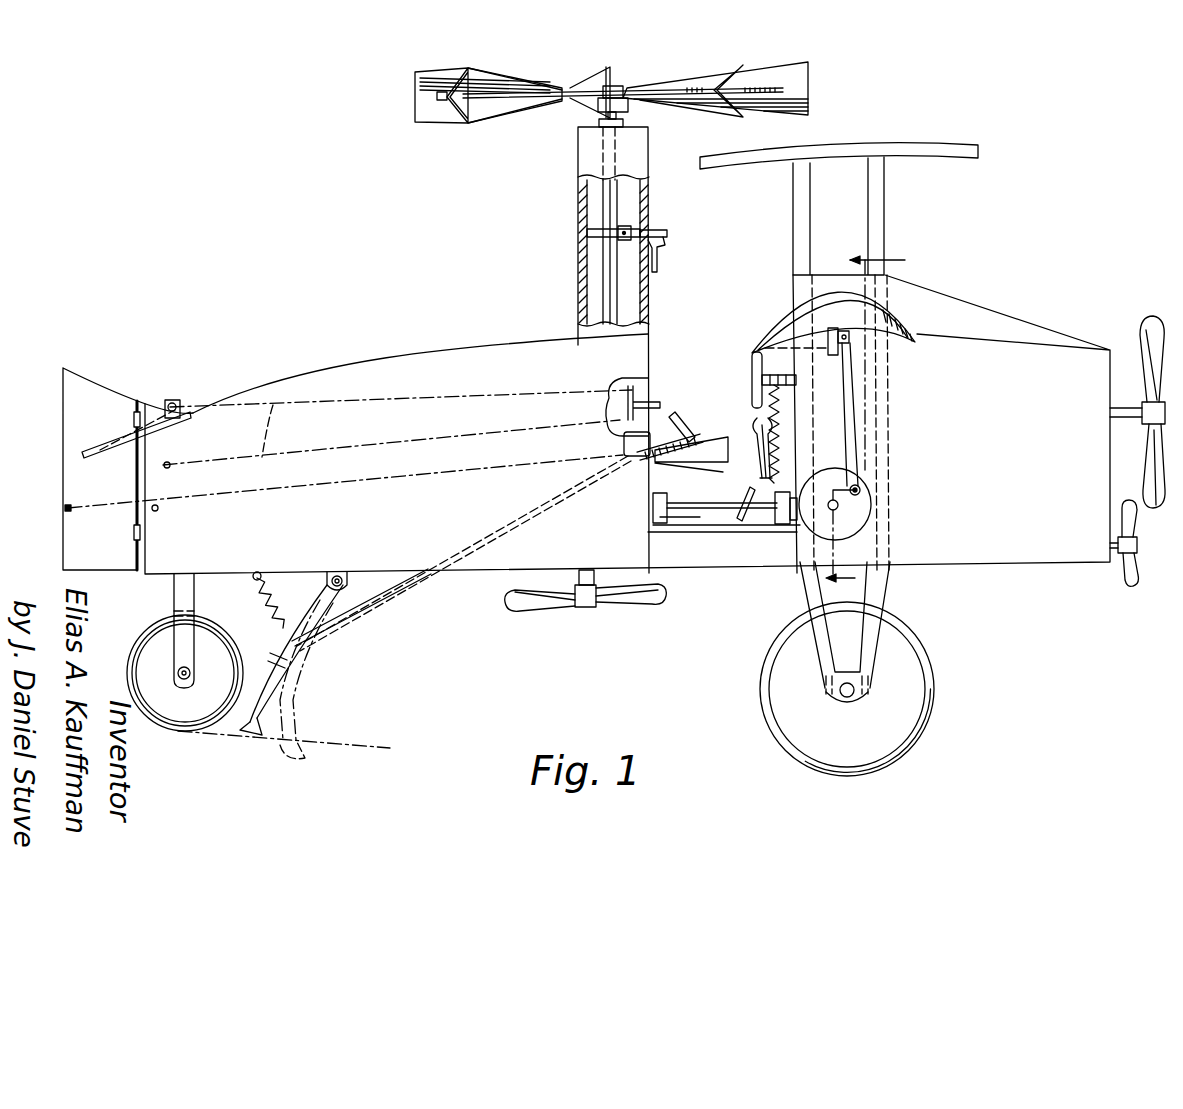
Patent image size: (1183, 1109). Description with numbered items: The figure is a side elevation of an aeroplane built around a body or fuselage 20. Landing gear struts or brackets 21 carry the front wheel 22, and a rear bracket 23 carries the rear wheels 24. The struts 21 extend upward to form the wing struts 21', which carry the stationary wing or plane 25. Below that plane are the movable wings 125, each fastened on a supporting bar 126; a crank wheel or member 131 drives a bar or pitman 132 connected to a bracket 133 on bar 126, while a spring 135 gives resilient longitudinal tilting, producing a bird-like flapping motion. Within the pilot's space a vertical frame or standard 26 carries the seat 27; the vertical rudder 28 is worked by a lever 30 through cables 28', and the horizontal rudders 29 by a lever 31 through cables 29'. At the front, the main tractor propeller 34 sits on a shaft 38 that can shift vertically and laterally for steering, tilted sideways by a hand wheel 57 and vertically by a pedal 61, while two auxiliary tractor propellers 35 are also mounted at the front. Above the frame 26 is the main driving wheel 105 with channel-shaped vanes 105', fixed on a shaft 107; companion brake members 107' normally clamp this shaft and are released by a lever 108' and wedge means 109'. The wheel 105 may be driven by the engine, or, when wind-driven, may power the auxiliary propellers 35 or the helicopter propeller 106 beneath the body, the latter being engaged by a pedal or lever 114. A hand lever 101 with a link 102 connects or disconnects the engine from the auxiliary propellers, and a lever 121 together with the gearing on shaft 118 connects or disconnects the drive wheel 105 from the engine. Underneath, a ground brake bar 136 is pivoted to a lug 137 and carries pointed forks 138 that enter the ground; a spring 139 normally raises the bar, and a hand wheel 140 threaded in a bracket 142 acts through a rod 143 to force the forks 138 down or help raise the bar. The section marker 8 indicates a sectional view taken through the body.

The body or fuselage 20 is at (589, 424).
The vertical rudder 28 is at (128, 469).
The cables or connecting means 28' is at (54, 526).
The horizontal rudders 29 is at (103, 433).
The cables or connecting means 29' is at (281, 431).
The vertical frame or standard 26 is at (648, 325).
The shaft 107 is at (649, 205).
The companion brake members 107' is at (585, 241).
The wedge means 109' is at (674, 218).
The lever 108' is at (685, 254).
The main driving wheel 105 is at (611, 90).
The channel-shaped vanes 105' is at (608, 102).
The stationary wing or plane 25 is at (930, 150).
The wing struts 21' is at (838, 216).
The section line 8- 8 is at (872, 421).
The wings 125 is at (913, 337).
The hand wheel 57 is at (752, 368).
The supporting bar 126 is at (828, 350).
The bracket 133 is at (850, 340).
The bar or pitman 132 is at (847, 427).
The crank wheel or member 131 is at (823, 480).
The spring 135 is at (785, 400).
The lever 121 is at (758, 414).
The hand lever 101 is at (763, 463).
The seat 27 is at (707, 440).
The hand wheel 140 is at (693, 423).
The lever 31 is at (643, 395).
The lever 30 is at (615, 445).
The threaded bracket 142 is at (655, 480).
The shaft 118 is at (698, 493).
The pedal 61 is at (747, 490).
The pedal or lever 114 is at (672, 527).
The link 102 is at (782, 513).
The front wheel 22 is at (918, 652).
The landing gear struts or brackets 21 is at (869, 632).
The rear wheels 24 is at (217, 643).
The rear bracket 23 is at (194, 595).
The lug 137 is at (347, 583).
The rod 143 is at (408, 596).
The brake bar 136 is at (297, 652).
The pointed forks 138 is at (253, 735).
The spring 139 is at (272, 603).
The helicopter propeller 106 is at (617, 605).
The main tractor propeller 34 is at (1152, 315).
The shaft 38 is at (1123, 408).
The auxiliary tractor propellers 35 is at (1130, 528).